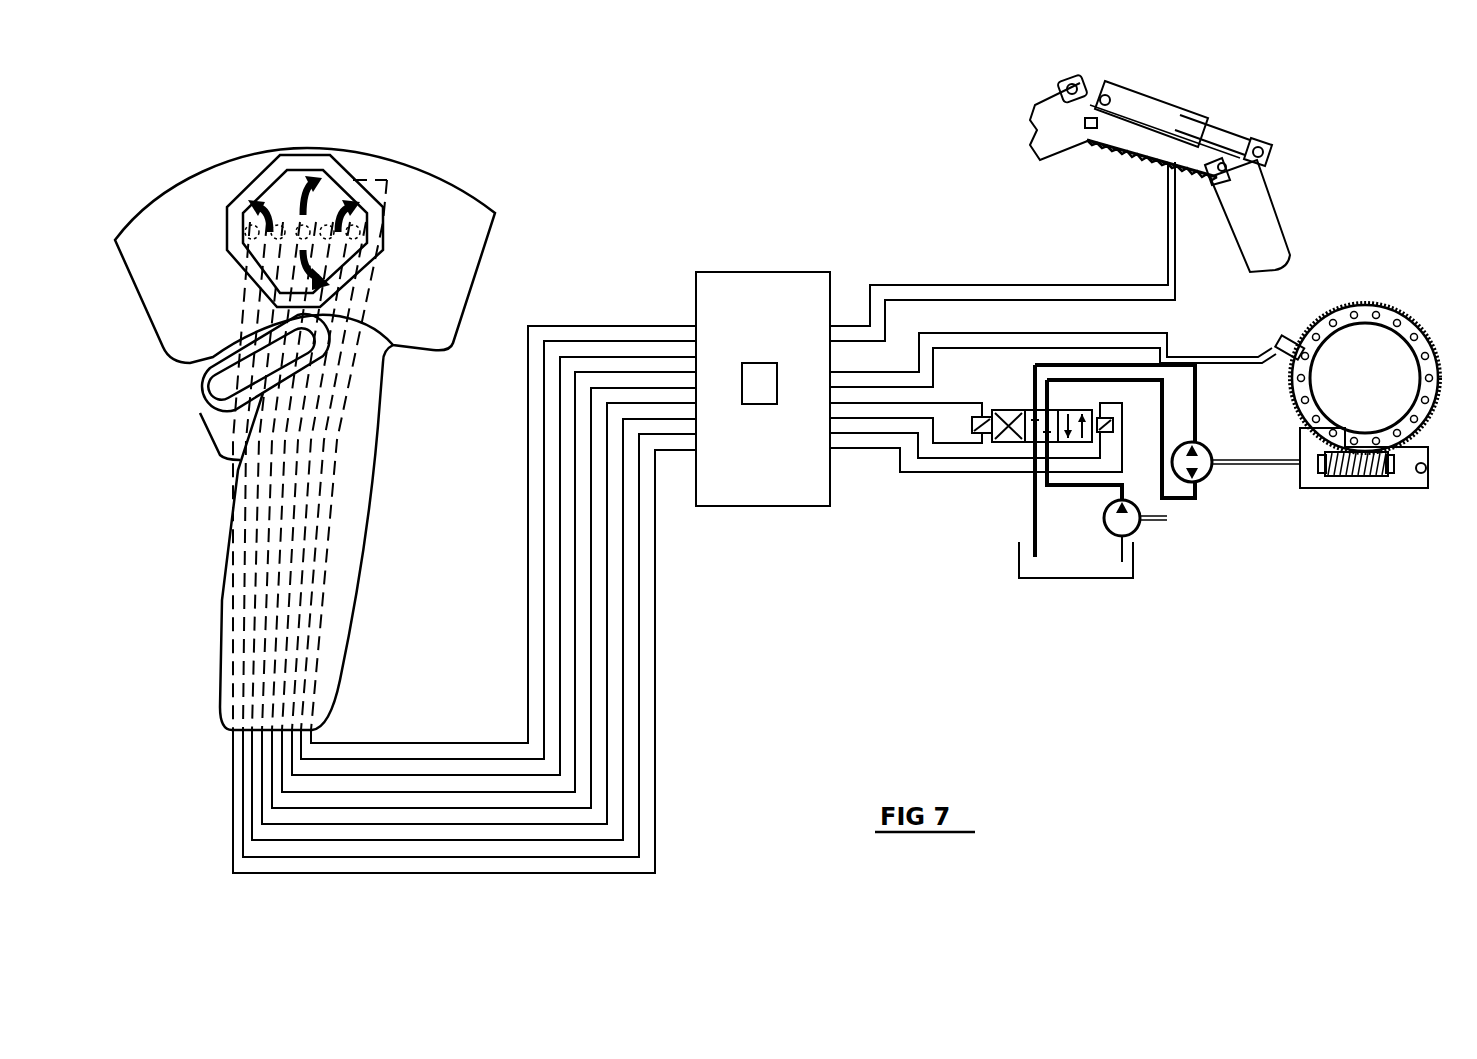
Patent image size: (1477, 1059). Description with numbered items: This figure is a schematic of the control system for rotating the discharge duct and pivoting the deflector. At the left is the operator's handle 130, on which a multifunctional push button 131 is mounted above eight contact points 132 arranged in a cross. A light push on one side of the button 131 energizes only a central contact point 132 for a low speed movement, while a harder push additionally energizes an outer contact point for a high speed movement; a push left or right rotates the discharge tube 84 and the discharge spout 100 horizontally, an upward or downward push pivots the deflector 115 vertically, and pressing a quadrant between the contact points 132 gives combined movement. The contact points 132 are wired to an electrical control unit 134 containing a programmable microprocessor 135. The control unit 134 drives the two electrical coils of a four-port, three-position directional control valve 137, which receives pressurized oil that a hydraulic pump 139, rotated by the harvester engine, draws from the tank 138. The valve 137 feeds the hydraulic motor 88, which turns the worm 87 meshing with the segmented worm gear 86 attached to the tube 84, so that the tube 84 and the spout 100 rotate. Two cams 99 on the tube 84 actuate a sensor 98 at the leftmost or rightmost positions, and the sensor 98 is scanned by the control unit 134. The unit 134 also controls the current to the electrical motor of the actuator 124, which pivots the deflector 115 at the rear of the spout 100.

The operator's handle 130 is at (172, 318).
The multifunctional push button 131 is at (275, 190).
The contact points 132 is at (300, 178).
The electrical control unit 134 is at (722, 268).
The programmable microprocessor 135 is at (760, 400).
The directional control valve 137 is at (1000, 442).
The tank 138 is at (1083, 565).
The hydraulic pump 139 is at (1135, 513).
The hydraulic motor 88 is at (1205, 473).
The worm 87 is at (1360, 477).
The segmented worm gear 86 is at (1432, 400).
The discharge tube 84 is at (1375, 375).
The cams 99 is at (1390, 348).
The sensor 98 is at (1292, 340).
The discharge spout 100 is at (1032, 112).
The actuator 124 is at (1128, 112).
The deflector 115 is at (1285, 133).